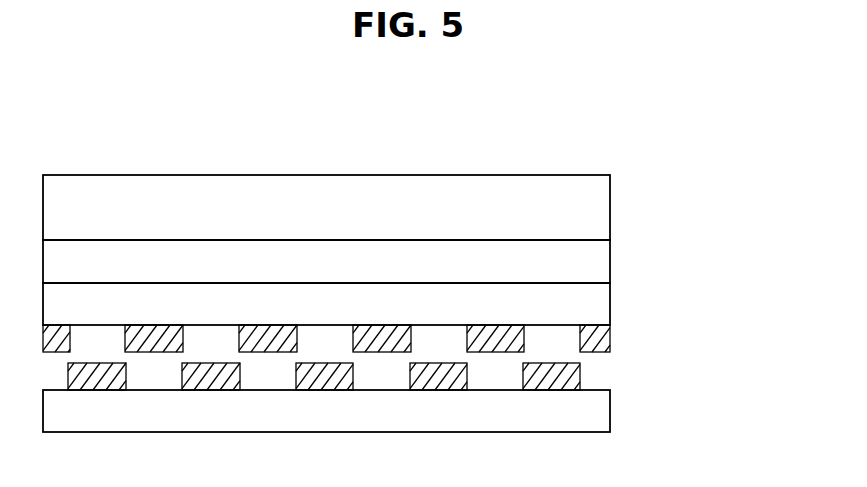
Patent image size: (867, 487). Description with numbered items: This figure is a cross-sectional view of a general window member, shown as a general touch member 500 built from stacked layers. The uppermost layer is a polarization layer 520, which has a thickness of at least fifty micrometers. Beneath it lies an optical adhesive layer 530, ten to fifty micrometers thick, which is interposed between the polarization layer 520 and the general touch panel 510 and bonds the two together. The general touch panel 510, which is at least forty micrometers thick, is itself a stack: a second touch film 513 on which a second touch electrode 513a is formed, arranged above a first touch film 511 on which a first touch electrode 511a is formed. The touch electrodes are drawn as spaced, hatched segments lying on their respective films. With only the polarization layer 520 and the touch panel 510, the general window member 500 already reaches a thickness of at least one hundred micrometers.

The general touch member 500 is at (600, 134).
The polarization layer 520 is at (598, 205).
The optical adhesive layer 530 is at (598, 263).
The general touch panel 510 is at (723, 302).
The second touch film 513 is at (603, 311).
The second touch electrode 513a is at (597, 346).
The first touch electrode 511a is at (595, 375).
The first touch film 511 is at (597, 409).